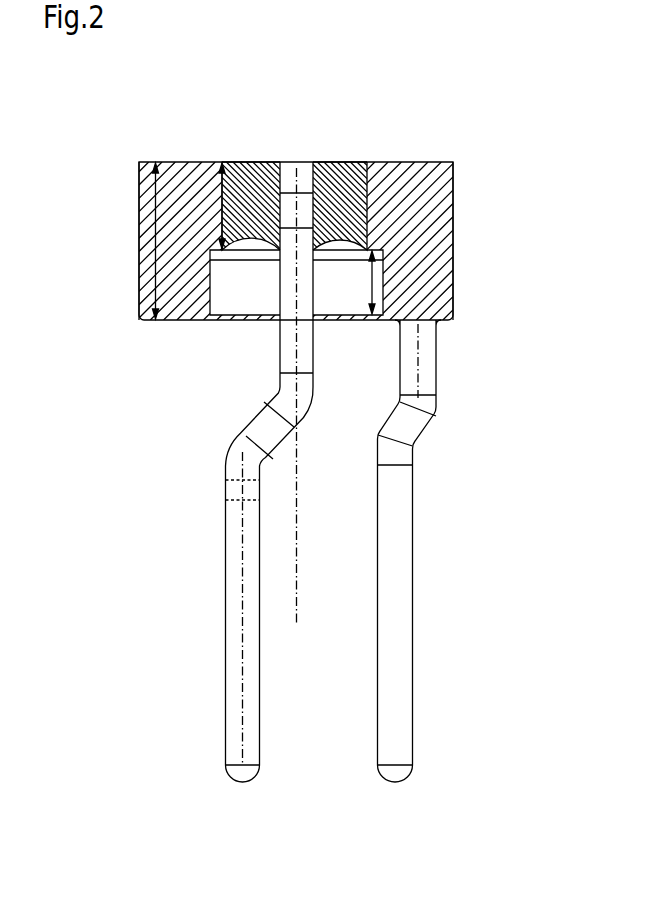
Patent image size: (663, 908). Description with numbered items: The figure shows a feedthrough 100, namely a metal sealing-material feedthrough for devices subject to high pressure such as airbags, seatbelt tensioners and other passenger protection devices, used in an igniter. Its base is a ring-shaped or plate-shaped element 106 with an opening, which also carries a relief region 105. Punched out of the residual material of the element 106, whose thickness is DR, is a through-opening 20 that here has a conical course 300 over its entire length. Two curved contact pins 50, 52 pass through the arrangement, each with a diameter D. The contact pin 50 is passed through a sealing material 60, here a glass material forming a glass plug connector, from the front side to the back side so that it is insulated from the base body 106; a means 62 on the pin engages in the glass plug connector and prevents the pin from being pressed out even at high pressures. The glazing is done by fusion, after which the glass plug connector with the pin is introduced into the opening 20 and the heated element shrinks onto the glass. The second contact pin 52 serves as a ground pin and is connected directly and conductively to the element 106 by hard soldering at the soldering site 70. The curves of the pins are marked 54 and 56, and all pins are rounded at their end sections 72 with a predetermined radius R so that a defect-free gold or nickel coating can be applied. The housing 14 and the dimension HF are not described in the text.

The feedthrough 100 is at (415, 150).
The housing 14 is at (173, 322).
The through-opening 20 is at (353, 162).
The conical course 300 is at (367, 217).
The sealing material 60 is at (318, 162).
The means 62 is at (290, 185).
The soldering site 70 is at (436, 322).
The relief region 105 is at (242, 297).
The ring-shaped element 106 is at (175, 162).
The contact pin 50 is at (232, 575).
The second contact pin 52 is at (402, 573).
The curve 54 is at (227, 450).
The curve 56 is at (413, 437).
The end sections 72 is at (241, 778).
The diameter D is at (150, 229).
The thickness DR is at (218, 201).
The recess height HF is at (372, 284).
The radius R is at (298, 447).